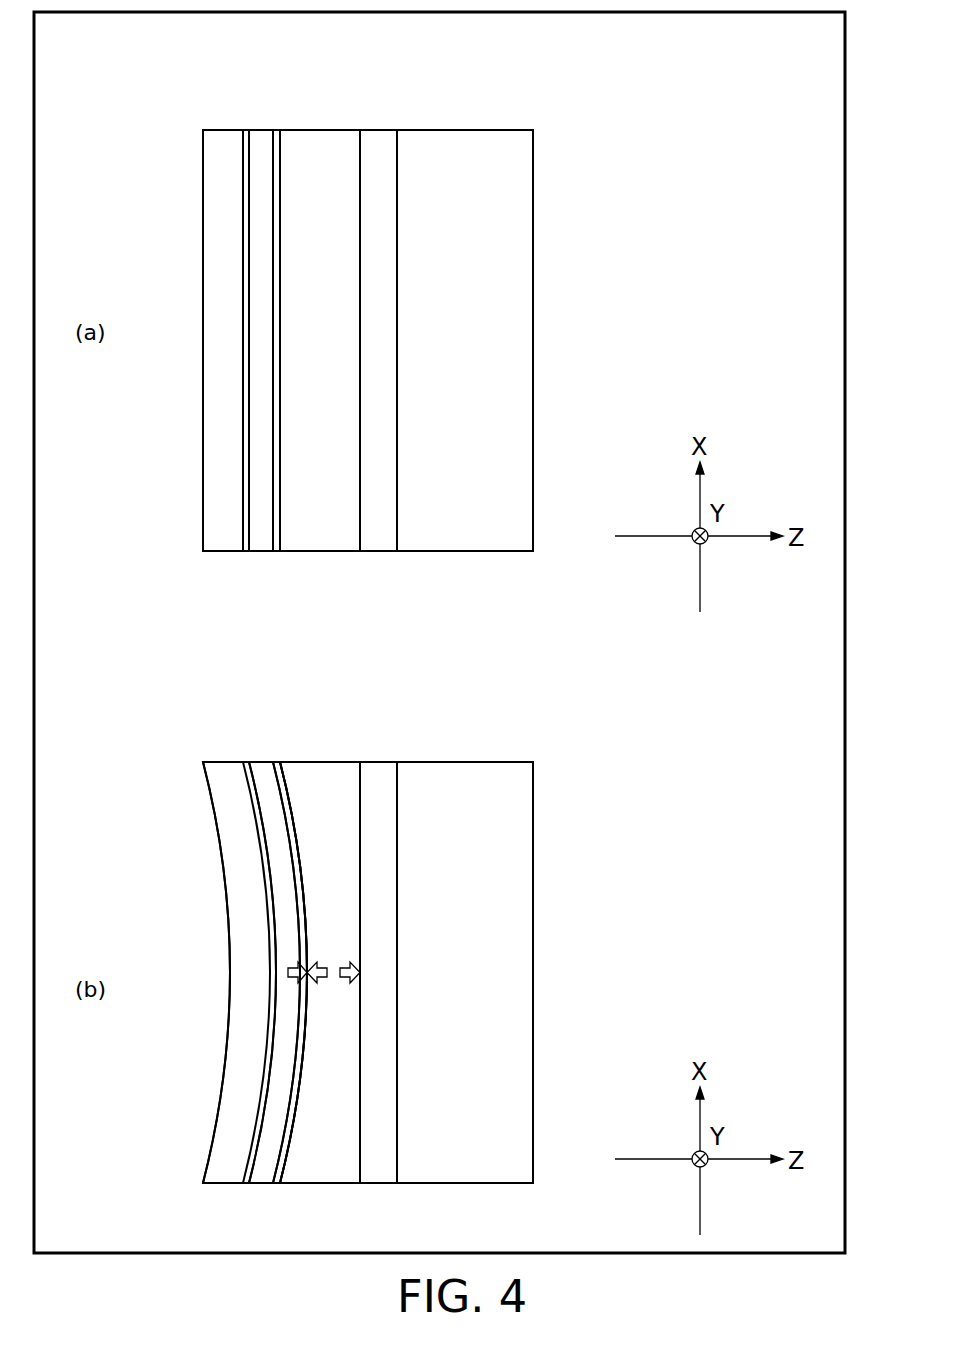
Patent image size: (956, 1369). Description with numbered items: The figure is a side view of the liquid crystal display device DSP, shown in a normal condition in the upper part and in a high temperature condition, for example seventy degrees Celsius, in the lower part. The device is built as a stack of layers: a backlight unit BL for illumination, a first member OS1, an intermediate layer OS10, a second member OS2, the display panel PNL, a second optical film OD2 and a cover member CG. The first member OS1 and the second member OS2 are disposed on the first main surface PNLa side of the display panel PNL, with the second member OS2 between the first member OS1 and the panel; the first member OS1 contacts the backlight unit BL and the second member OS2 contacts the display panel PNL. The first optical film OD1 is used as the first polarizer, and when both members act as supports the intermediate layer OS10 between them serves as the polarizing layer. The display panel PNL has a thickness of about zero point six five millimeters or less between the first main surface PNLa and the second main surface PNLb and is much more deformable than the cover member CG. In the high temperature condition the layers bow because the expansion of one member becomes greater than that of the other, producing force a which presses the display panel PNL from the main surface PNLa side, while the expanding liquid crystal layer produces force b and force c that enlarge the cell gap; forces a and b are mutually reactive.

The liquid crystal display device DSP is at (539, 107).
The backlight unit BL is at (218, 142).
The first member OS1 is at (245, 130).
The first optical film OD1 is at (262, 118).
The second member OS2 is at (278, 130).
The intermediate layer OS10 is at (262, 250).
The display panel PNL is at (333, 142).
The first main surface PNLa is at (265, 533).
The second main surface PNLb is at (372, 534).
The second optical film OD2 is at (385, 142).
The cover member CG is at (464, 142).
The force a is at (297, 987).
The force b is at (317, 987).
The force c is at (350, 987).